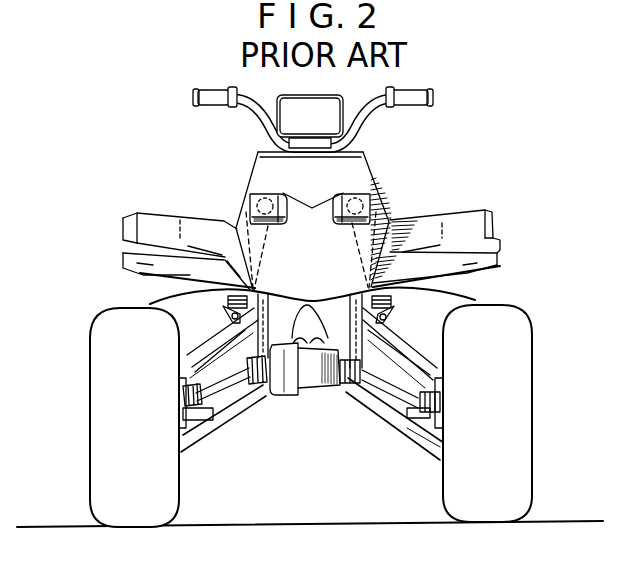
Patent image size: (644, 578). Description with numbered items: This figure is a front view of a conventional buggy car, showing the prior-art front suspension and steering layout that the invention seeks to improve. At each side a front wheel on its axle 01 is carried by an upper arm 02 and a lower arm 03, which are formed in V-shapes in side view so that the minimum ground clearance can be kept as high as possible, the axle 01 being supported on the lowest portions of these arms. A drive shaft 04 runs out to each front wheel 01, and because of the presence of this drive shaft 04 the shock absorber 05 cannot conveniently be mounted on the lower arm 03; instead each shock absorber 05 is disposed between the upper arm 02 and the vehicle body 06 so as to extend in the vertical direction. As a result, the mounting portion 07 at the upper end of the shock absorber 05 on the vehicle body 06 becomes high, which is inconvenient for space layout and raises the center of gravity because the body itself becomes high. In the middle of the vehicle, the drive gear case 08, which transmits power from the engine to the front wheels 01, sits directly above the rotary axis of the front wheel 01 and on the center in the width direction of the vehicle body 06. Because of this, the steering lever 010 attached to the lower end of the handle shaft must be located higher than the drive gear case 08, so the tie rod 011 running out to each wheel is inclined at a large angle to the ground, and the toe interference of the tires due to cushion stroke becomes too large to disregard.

The axle 01 is at (100, 350).
The upper arm 02 is at (412, 355).
The lower arm 03 is at (428, 436).
The drive shaft 04 is at (390, 395).
The shock absorber 05 is at (228, 296).
The vehicle body 06 is at (356, 177).
The mounting portion 07 is at (253, 207).
The drive gear case 08 is at (316, 389).
The steering lever 010 is at (270, 396).
The tie rod 011 is at (218, 418).